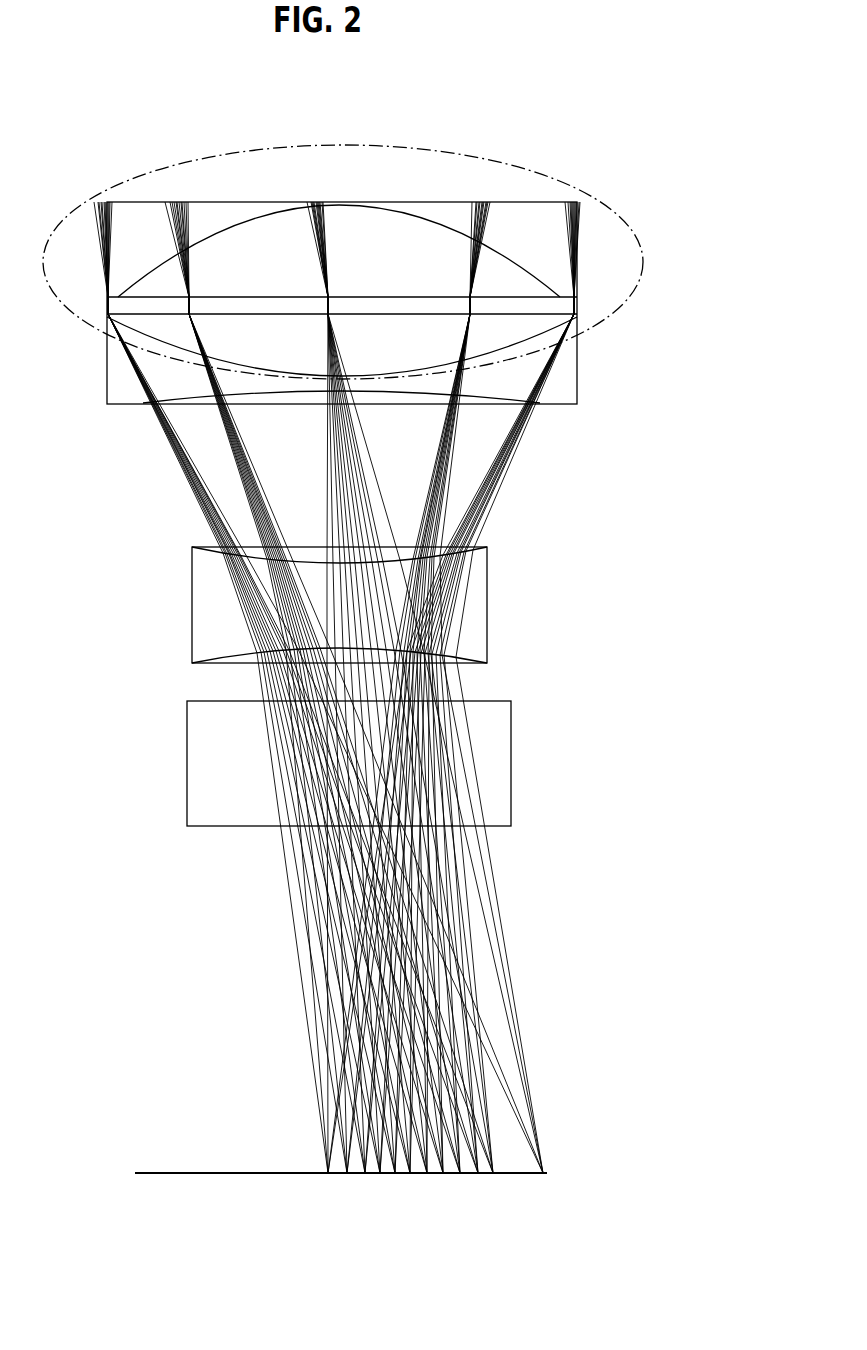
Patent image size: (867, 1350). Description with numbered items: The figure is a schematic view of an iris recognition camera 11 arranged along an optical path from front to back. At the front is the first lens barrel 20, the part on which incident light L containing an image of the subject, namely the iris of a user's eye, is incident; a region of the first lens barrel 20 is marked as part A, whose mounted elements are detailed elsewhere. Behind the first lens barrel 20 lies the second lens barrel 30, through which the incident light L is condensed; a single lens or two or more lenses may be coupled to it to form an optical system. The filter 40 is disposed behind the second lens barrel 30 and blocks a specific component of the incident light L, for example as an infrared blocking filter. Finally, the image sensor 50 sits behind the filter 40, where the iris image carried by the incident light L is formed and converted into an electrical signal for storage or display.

The iris recognition camera 11 is at (639, 166).
The first lens barrel 20 is at (107, 358).
The part A of the first lens barrel A is at (598, 316).
The second lens barrel 30 is at (192, 598).
The filter 40 is at (187, 762).
The incident light L is at (270, 990).
The image sensor 50 is at (218, 1173).